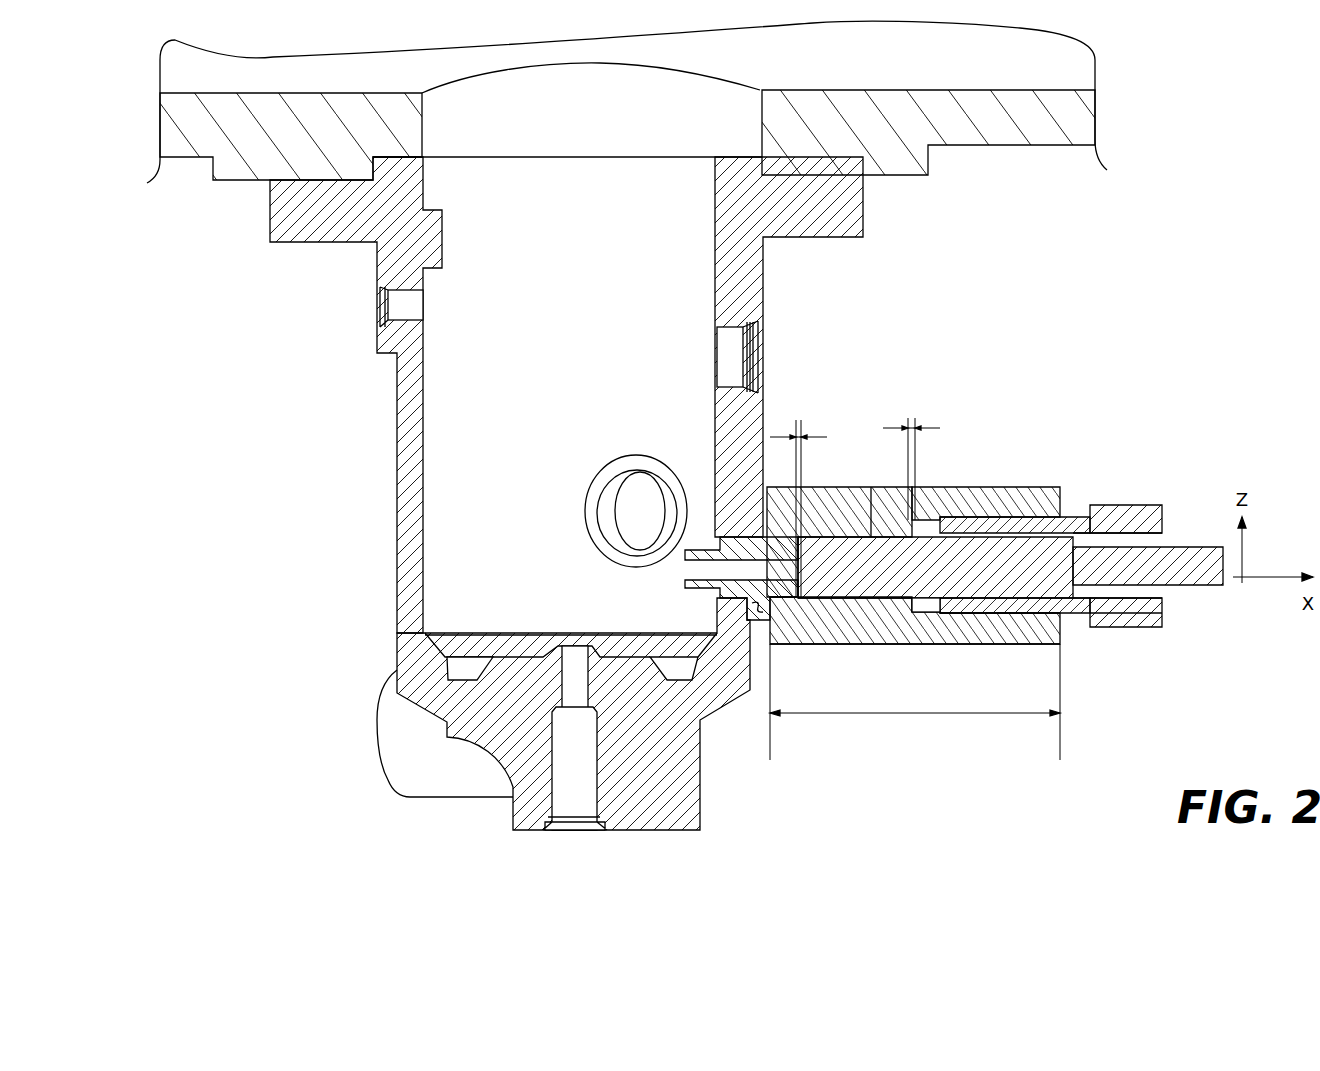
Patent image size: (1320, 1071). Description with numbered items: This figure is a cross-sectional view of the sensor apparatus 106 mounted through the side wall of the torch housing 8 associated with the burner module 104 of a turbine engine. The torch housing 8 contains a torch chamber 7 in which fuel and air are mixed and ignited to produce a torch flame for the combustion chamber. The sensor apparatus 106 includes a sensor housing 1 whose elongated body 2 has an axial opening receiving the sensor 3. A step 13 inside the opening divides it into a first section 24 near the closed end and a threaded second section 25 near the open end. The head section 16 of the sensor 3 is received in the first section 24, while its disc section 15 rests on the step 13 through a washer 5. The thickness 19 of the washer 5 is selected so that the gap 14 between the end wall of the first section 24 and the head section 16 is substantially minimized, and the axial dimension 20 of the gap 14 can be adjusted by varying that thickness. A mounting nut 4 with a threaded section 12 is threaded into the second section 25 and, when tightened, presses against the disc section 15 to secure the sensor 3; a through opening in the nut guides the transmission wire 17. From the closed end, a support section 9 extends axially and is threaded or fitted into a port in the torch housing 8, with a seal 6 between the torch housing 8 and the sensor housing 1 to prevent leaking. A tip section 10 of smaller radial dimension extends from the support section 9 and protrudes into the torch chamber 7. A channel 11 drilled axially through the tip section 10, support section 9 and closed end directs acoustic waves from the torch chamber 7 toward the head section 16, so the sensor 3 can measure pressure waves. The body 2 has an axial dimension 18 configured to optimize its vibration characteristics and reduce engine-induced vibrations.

The sensor housing 1 is at (830, 495).
The elongated body 2 is at (935, 495).
The sensor 3 is at (1025, 548).
The mounting nut 4 is at (1128, 515).
The washer 5 is at (930, 614).
The seal 6 is at (800, 625).
The torch chamber 7 is at (660, 363).
The torch housing 8 is at (762, 407).
The support section 9 is at (721, 587).
The tip section 10 is at (685, 575).
The channel 11 is at (690, 568).
The threaded section 12 is at (1007, 612).
The step 13 is at (910, 613).
The gap 14 is at (810, 590).
The disc section 15 is at (932, 527).
The head section 16 is at (838, 553).
The transmission wire 17 is at (1112, 577).
The axial dimension 18 is at (915, 702).
The thickness 19 is at (917, 425).
The axial dimension 20 is at (797, 432).
The first section 24 is at (882, 644).
The second section 25 is at (988, 614).
The burner module 104 is at (1030, 147).
The sensor apparatus 106 is at (1068, 320).